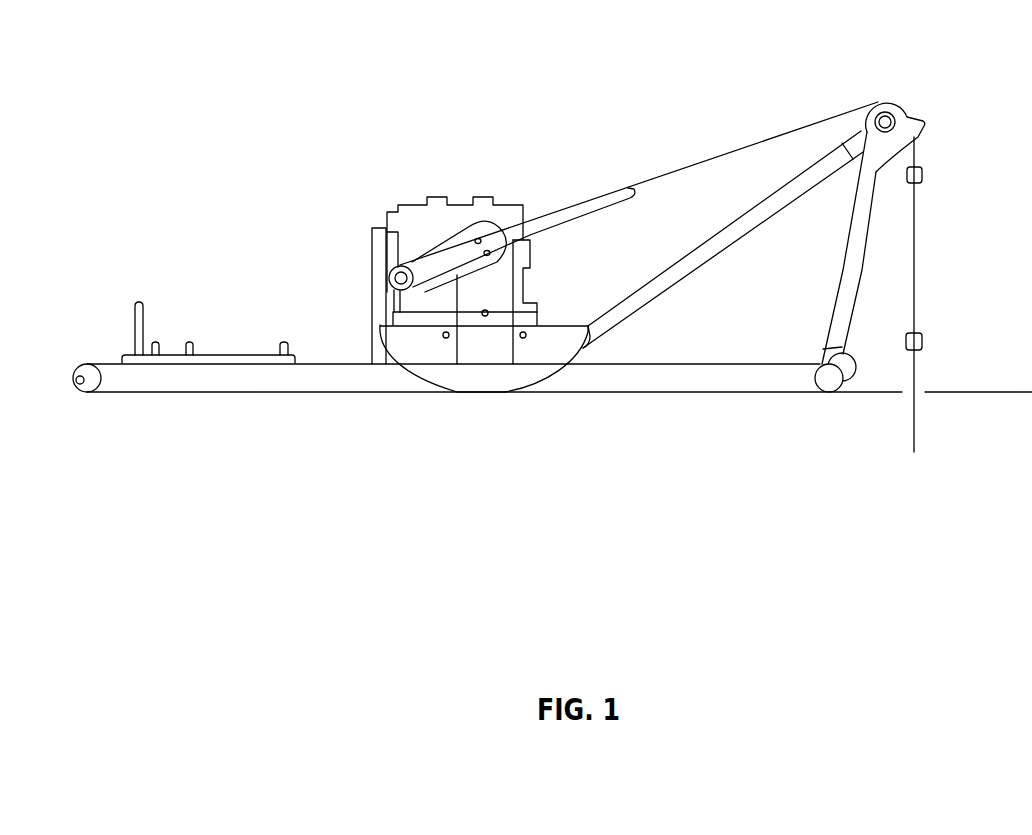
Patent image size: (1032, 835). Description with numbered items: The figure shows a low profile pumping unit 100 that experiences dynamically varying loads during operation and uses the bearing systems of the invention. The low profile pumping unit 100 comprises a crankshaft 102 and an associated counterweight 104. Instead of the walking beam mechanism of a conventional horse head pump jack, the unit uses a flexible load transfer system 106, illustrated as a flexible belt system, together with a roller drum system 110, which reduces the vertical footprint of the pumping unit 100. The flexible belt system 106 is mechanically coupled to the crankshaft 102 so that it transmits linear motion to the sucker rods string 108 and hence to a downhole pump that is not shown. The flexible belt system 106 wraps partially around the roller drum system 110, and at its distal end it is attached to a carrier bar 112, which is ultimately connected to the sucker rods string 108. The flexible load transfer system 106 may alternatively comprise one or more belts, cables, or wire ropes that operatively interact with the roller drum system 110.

The low profile pumping unit 100 is at (232, 69).
The crankshaft 102 is at (401, 276).
The counterweight 104 is at (463, 267).
The flexible load transfer system 106 is at (750, 147).
The sucker rods string 108 is at (915, 375).
The roller drum system 110 is at (897, 110).
The carrier bar 112 is at (922, 177).